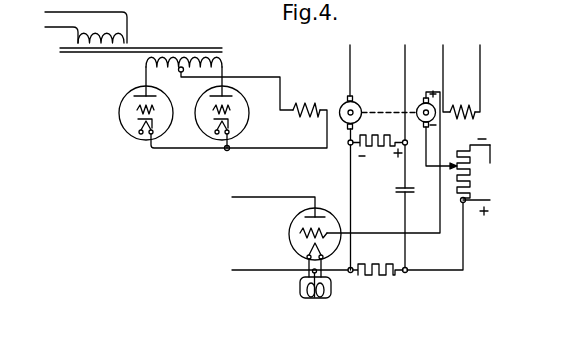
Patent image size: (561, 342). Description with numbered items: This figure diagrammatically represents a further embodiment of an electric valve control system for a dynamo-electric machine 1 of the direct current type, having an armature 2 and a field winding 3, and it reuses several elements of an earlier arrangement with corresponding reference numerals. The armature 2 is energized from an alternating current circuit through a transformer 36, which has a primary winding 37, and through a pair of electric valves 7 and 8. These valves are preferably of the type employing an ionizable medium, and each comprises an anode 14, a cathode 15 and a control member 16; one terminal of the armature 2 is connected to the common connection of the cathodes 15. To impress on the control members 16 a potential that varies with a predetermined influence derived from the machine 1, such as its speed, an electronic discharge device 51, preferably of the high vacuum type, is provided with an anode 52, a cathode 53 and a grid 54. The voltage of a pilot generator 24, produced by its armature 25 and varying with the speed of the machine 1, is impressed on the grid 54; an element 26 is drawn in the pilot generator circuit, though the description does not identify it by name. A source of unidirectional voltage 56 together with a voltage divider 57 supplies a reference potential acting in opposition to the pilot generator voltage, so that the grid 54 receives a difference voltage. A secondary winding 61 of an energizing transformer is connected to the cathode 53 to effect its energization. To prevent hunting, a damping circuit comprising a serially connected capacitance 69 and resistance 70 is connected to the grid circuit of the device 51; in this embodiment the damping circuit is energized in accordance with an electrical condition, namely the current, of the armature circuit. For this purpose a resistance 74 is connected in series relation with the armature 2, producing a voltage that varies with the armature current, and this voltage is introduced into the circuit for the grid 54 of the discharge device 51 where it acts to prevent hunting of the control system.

The dynamo-electric machine 1 is at (343, 146).
The armature 2 is at (341, 105).
The field winding 3 is at (304, 117).
The electric valve 7 is at (125, 92).
The electric valve 8 is at (245, 99).
The anode 14 is at (151, 96).
The cathode 15 is at (153, 130).
The control member 16 is at (154, 108).
The pilot generator 24 is at (459, 137).
The armature 25 is at (383, 162).
The resistor 26 is at (458, 106).
The transformer 36 is at (222, 50).
The primary winding 37 is at (125, 41).
The electronic discharge device 51 is at (327, 212).
The anode 52 is at (305, 216).
The cathode 53 is at (306, 251).
The grid 54 is at (300, 233).
The source of unidirectional voltage 56 is at (485, 199).
The voltage divider 57 is at (458, 184).
The secondary winding 61 is at (331, 290).
The capacitance 69 is at (391, 190).
The resistance 70 is at (375, 260).
The resistance 74 is at (381, 135).